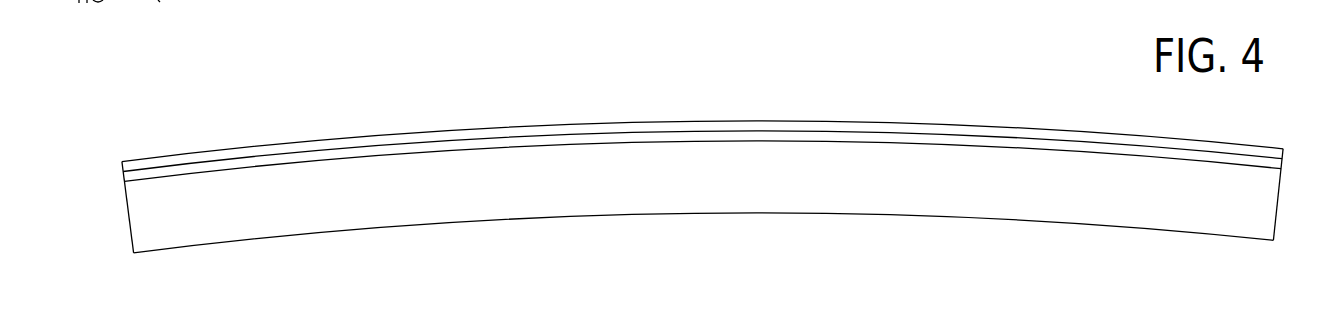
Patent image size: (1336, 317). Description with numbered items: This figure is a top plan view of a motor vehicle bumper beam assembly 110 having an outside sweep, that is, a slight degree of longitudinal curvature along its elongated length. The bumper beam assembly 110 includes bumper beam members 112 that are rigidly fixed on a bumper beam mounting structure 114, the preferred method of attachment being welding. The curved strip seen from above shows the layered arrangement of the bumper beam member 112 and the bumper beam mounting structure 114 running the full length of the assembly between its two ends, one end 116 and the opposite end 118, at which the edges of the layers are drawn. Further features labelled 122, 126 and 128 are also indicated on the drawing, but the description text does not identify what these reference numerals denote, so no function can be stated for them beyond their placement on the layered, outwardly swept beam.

The bumper beam assembly 110 is at (698, 138).
The bumper beam member 112 is at (545, 219).
The bumper beam mounting structure 114 is at (1265, 153).
The end edge 116 is at (1282, 208).
The end edge 118 is at (121, 212).
The core layer 122 is at (595, 173).
The intermediate layer 126 is at (696, 137).
The adjacent figure element 128 is at (181, 0).